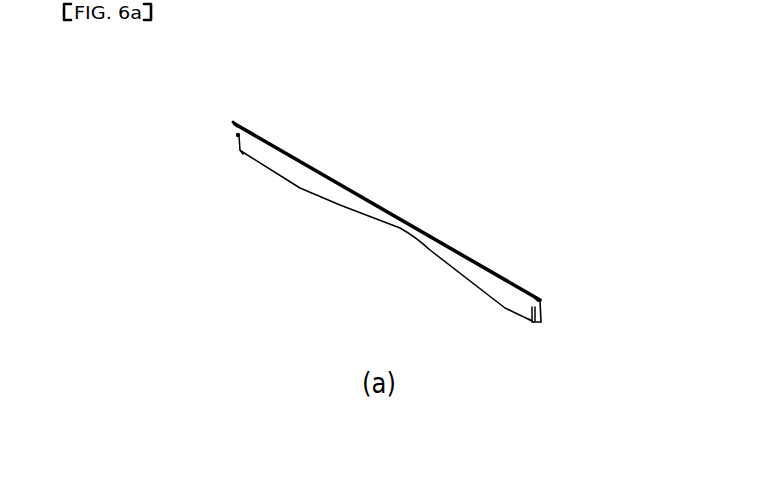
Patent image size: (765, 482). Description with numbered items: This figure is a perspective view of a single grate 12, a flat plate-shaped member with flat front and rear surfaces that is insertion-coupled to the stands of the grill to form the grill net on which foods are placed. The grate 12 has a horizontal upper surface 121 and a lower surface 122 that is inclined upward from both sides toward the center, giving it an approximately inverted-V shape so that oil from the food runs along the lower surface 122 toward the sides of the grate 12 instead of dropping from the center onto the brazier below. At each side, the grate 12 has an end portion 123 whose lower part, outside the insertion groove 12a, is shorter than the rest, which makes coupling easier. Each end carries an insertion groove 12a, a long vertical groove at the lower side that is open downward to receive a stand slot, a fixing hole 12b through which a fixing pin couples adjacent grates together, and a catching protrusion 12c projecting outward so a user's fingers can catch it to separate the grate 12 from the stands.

The grate 12 is at (422, 157).
The insertion groove 12a is at (241, 153).
The fixing hole 12b is at (236, 133).
The catching protrusion 12c is at (235, 123).
The horizontal upper surface 121 is at (445, 242).
The lower surface 122 is at (367, 213).
The end portion 123 is at (239, 149).